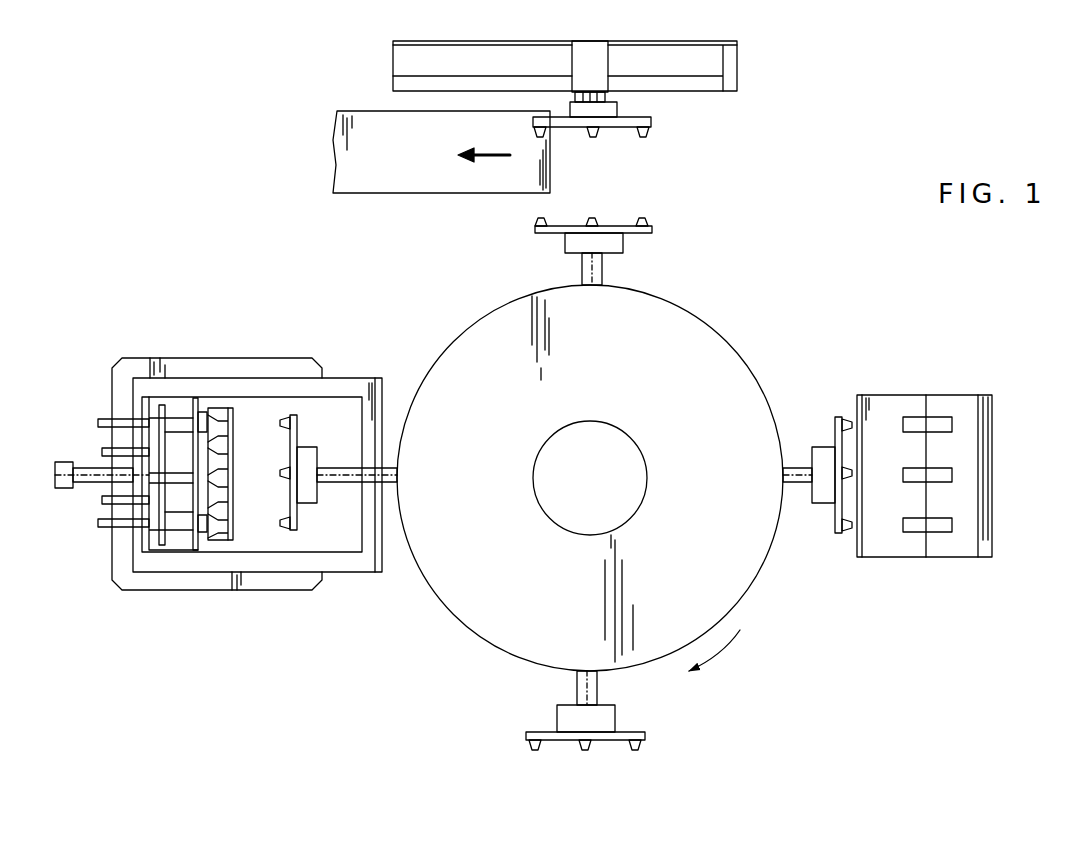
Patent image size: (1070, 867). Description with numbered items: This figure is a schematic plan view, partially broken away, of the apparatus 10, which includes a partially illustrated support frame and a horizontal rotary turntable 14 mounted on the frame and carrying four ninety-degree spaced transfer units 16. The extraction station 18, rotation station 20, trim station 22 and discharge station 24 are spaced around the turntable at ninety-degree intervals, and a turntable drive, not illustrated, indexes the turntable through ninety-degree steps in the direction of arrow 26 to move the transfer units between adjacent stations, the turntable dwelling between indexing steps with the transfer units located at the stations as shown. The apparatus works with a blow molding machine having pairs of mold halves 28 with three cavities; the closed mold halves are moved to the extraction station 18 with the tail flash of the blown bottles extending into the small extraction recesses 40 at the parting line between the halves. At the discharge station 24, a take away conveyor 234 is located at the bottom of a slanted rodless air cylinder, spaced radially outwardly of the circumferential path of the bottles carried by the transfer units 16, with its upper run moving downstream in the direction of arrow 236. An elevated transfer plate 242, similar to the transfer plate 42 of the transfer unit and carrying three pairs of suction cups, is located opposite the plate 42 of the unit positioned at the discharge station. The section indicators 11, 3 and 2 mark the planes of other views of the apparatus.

The apparatus 10 is at (208, 255).
The horizontal rotary turntable 14 is at (708, 348).
The transfer units 16 is at (563, 254).
The extraction station 18 is at (945, 430).
The rotation station 20 is at (575, 407).
The trim station 22 is at (301, 346).
The discharge station 24 is at (536, 231).
The arrow 26 is at (720, 651).
The mold halves 28 is at (955, 400).
The extraction recesses 40 is at (943, 520).
The transfer plate 42 is at (535, 227).
The take away conveyor 234 is at (418, 180).
The arrow 236 is at (487, 155).
The transfer plate 242 is at (653, 120).
The section line 11- 11 is at (687, 320).
The section line 3- 3 is at (845, 592).
The section line 2- 2 is at (133, 773).